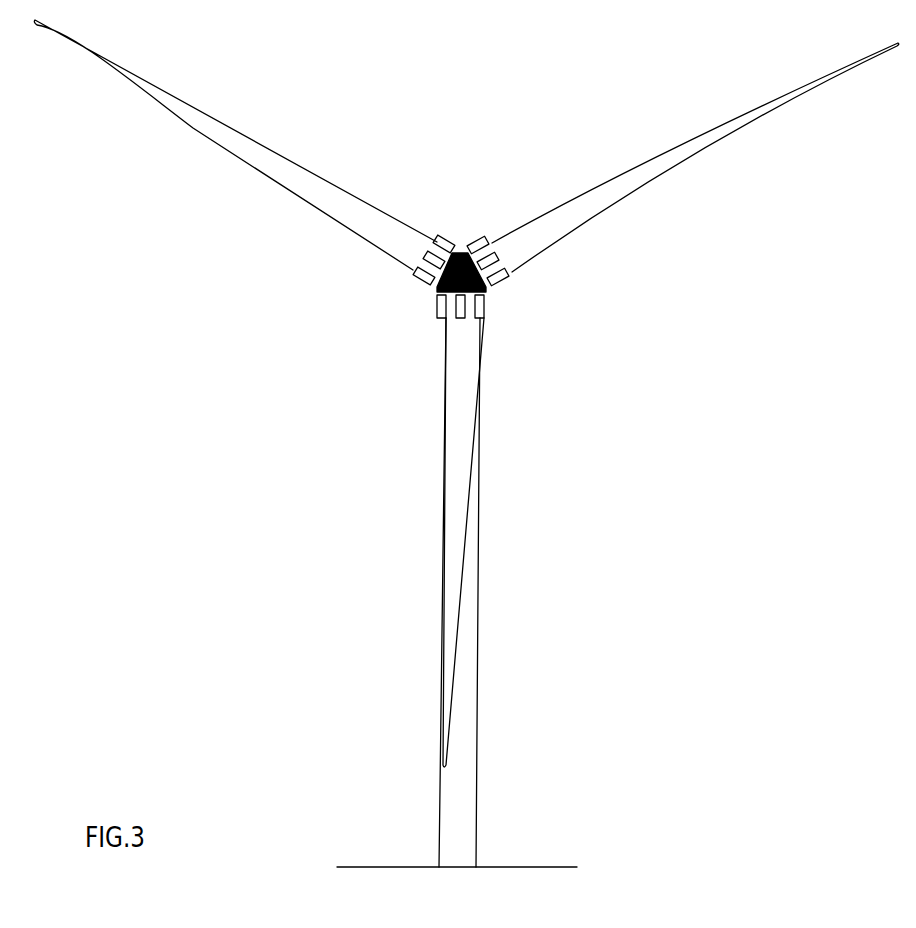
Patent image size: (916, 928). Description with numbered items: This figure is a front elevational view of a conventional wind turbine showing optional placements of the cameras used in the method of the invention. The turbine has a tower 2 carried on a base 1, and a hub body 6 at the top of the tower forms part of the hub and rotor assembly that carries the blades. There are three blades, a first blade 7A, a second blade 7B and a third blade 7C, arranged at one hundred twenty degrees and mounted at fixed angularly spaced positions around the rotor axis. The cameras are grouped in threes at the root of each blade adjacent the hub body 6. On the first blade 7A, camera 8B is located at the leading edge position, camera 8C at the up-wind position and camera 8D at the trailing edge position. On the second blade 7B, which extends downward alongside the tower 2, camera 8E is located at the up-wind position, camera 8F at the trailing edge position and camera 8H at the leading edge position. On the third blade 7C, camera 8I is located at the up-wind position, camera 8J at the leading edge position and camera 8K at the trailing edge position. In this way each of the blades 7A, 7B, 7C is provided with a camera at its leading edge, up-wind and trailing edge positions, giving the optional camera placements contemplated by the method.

The base 1 is at (497, 867).
The tower 2 is at (468, 664).
The hub body 6 is at (482, 283).
The first blade 7A is at (657, 170).
The second blade 7B is at (460, 433).
The third blade 7C is at (287, 172).
The camera 8B is at (510, 275).
The camera 8C is at (497, 255).
The camera 8D is at (488, 238).
The camera 8E is at (460, 318).
The camera 8F is at (479, 318).
The camera 8H is at (446, 318).
The camera 8I is at (426, 258).
The camera 8J is at (434, 243).
The camera 8K is at (416, 277).